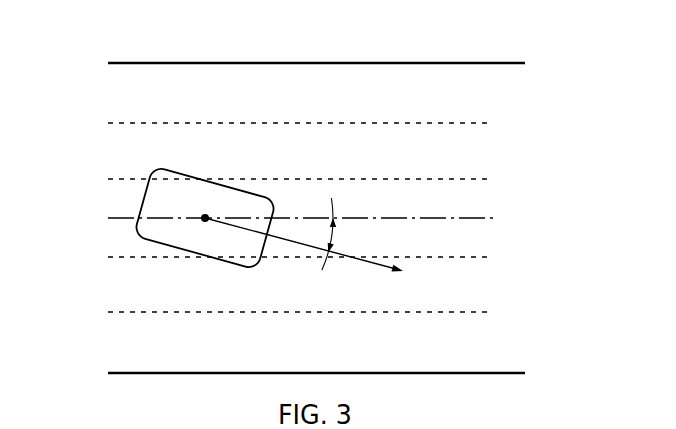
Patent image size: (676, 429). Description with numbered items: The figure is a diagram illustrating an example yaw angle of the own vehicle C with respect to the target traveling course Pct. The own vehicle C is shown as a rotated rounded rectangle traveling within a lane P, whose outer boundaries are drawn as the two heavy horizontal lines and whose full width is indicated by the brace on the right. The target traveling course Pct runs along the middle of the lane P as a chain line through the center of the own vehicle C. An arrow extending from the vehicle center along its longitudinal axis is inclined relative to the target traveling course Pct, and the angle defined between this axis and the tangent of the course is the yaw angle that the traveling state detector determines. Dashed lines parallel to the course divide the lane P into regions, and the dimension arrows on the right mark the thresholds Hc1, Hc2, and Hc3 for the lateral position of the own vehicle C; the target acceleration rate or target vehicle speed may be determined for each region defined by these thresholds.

The own vehicle C is at (151, 168).
The target traveling course Pct is at (122, 212).
The lane P is at (548, 55).
The threshold for lateral position Hc1 is at (484, 179).
The threshold for lateral position Hc2 is at (484, 123).
The threshold for lateral position Hc3 is at (484, 257).